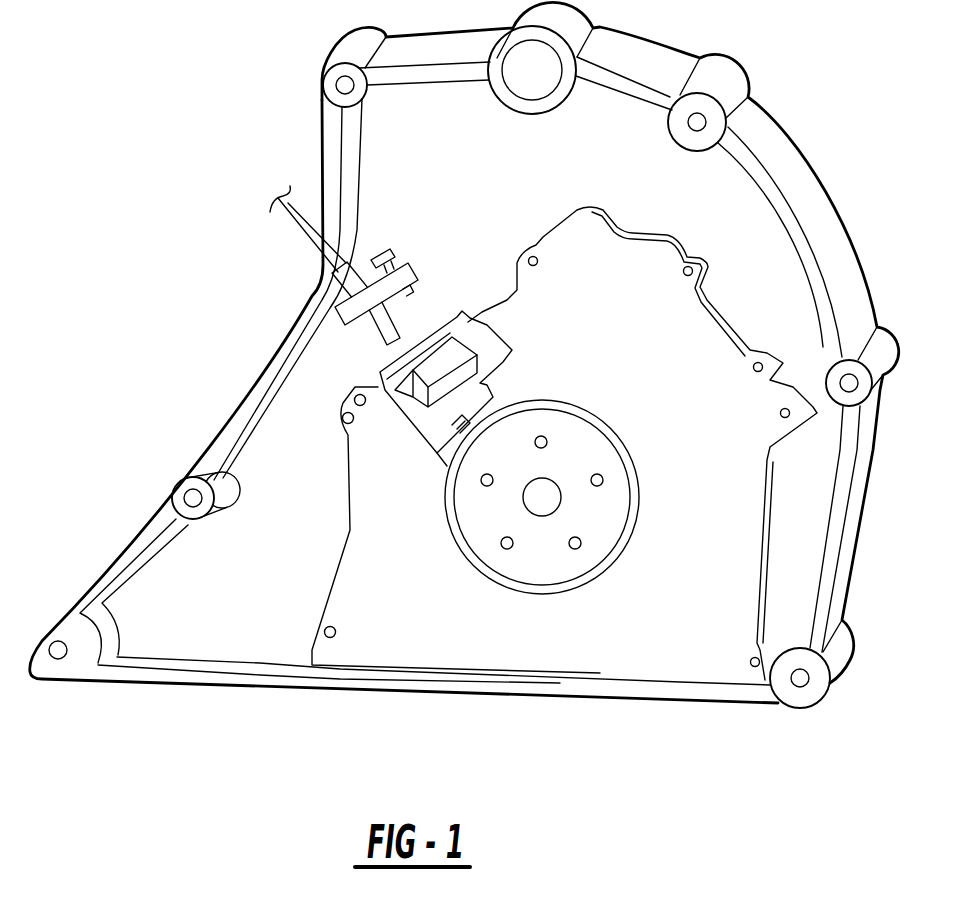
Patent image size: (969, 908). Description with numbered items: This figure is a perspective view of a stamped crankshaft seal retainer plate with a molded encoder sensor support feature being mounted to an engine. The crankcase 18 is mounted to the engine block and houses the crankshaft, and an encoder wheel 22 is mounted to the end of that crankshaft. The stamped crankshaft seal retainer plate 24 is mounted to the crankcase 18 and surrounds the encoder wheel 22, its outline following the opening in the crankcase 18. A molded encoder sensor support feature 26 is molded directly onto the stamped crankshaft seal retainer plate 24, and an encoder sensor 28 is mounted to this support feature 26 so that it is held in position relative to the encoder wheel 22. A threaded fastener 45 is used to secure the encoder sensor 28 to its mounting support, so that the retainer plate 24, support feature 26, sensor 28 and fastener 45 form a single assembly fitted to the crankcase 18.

The crankcase 18 is at (730, 193).
The encoder wheel 22 is at (552, 572).
The stamped crankshaft seal retainer plate 24 is at (707, 340).
The molded encoder sensor support feature 26 is at (483, 348).
The encoder sensor 28 is at (348, 312).
The threaded fastener 45 is at (390, 250).